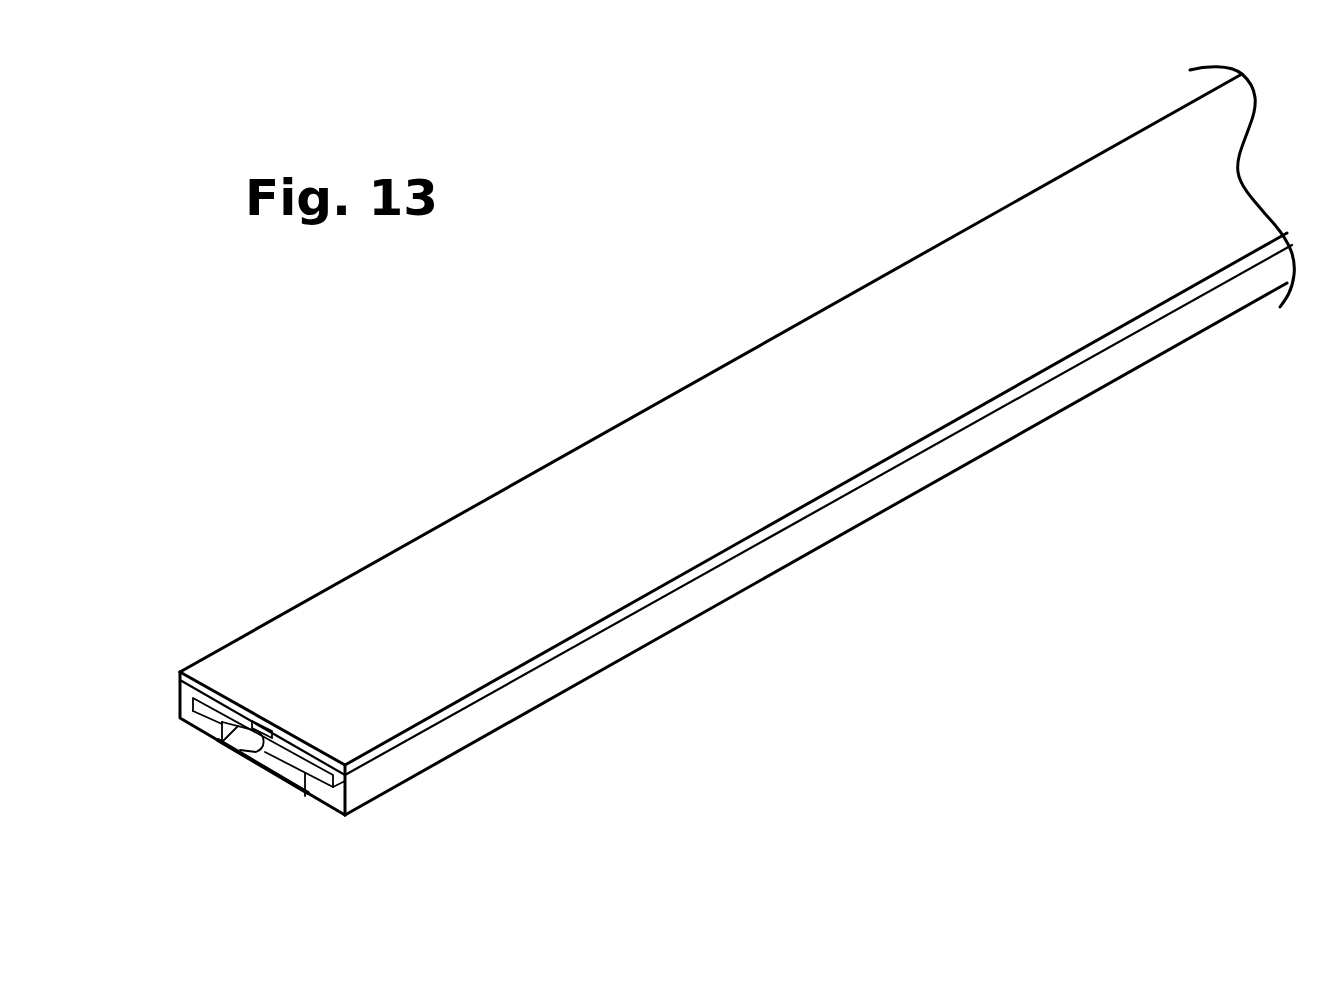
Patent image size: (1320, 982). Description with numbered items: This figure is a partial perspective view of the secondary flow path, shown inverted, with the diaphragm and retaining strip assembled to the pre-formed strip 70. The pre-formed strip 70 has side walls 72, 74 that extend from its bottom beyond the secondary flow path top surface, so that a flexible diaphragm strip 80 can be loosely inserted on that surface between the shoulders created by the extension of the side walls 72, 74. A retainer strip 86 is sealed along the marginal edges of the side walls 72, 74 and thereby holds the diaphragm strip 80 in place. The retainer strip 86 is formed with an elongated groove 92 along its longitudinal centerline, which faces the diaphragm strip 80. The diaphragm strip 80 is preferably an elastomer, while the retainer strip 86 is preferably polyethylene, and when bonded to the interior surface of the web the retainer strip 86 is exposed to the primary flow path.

The pre-formed strip 70 is at (582, 690).
The side wall 72 is at (180, 702).
The side wall 74 is at (480, 722).
The flexible diaphragm strip 80 is at (297, 760).
The retainer strip 86 is at (605, 453).
The elongated groove 92 is at (242, 757).